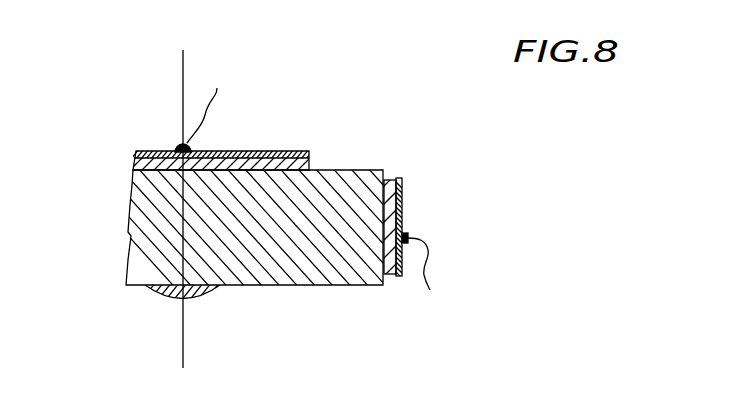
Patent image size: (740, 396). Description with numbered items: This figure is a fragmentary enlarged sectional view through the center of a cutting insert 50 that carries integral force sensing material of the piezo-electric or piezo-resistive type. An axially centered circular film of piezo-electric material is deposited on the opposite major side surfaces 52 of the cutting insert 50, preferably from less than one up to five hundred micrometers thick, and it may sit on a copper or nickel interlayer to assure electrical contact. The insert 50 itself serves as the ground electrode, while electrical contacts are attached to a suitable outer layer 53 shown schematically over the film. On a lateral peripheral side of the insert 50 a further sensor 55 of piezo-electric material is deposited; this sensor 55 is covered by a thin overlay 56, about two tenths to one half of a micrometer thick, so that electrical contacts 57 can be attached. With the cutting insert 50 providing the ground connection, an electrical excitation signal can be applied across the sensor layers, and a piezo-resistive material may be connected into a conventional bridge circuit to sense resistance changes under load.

The cutting insert 50 is at (138, 232).
The major side surfaces 52 is at (172, 297).
The outer layer 53 is at (236, 150).
The sensor 55 is at (388, 179).
The overlay 56 is at (402, 183).
The electrical contacts 57 is at (181, 147).